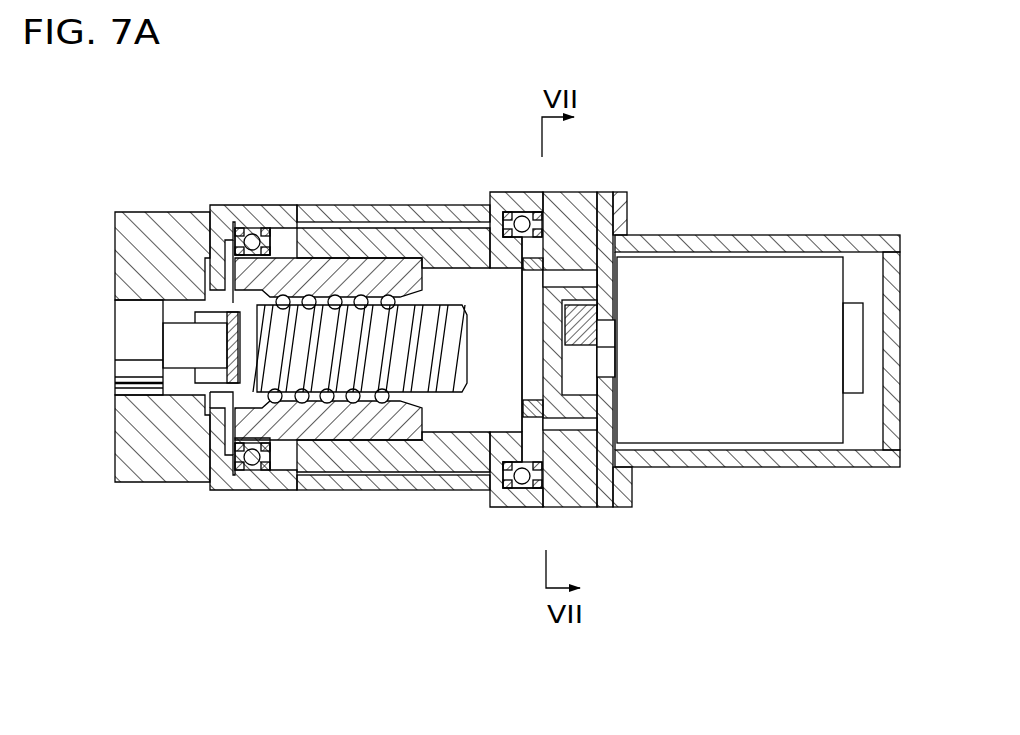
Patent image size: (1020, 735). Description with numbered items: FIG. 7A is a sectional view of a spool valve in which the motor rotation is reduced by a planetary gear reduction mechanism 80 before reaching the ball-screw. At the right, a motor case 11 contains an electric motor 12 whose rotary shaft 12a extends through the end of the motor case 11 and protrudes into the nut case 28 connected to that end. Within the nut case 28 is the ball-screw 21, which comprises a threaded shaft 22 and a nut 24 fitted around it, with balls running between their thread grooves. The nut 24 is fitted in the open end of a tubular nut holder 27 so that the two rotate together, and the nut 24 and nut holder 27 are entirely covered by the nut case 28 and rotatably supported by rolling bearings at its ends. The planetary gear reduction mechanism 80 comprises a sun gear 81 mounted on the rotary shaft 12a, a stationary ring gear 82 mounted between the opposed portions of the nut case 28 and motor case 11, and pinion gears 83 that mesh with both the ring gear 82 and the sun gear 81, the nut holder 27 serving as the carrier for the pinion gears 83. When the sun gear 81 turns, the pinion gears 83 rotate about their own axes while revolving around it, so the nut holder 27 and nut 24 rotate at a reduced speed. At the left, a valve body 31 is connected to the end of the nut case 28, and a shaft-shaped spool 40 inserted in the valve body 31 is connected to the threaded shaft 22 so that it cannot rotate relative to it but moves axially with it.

The motor case 11 is at (858, 237).
The electric motor 12 is at (777, 270).
The rotary shaft 12a is at (615, 352).
The ball-screw 21 is at (366, 236).
The threaded shaft 22 is at (298, 300).
The nut 24 is at (337, 267).
The nut holder 27 is at (422, 240).
The nut case 28 is at (225, 215).
The valve body 31 is at (149, 200).
The spool 40 is at (108, 333).
The planetary gear reduction mechanism 80 is at (535, 325).
The sun gear 81 is at (603, 327).
The stationary ring gear 82 is at (566, 192).
The pinion gears 83 is at (628, 203).